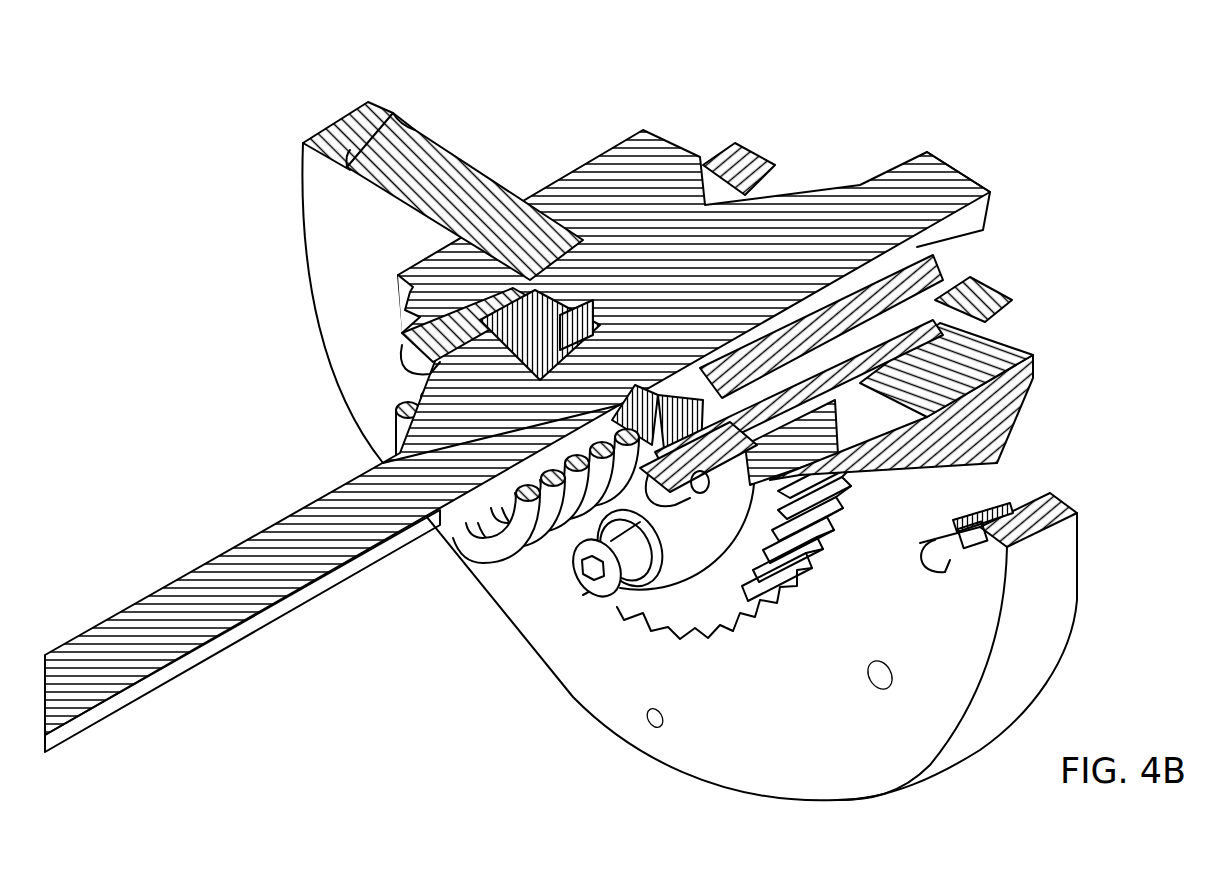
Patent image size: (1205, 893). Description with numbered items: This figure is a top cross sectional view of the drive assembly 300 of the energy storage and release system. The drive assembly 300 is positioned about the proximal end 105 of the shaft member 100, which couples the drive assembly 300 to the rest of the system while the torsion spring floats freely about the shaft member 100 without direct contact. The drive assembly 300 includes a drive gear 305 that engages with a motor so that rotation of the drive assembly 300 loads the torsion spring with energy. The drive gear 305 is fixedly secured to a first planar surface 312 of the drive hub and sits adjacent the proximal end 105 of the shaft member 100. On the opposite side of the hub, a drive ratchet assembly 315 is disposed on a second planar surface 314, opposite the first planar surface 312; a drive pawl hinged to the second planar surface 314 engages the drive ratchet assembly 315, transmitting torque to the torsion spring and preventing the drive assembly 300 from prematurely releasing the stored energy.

The shaft member 100 is at (272, 584).
The proximal end 105 is at (953, 163).
The drive assembly 300 is at (920, 88).
The drive gear 305 is at (1008, 343).
The first planar surface 312 is at (428, 138).
The second planar surface 314 is at (353, 174).
The drive ratchet assembly 315 is at (640, 605).